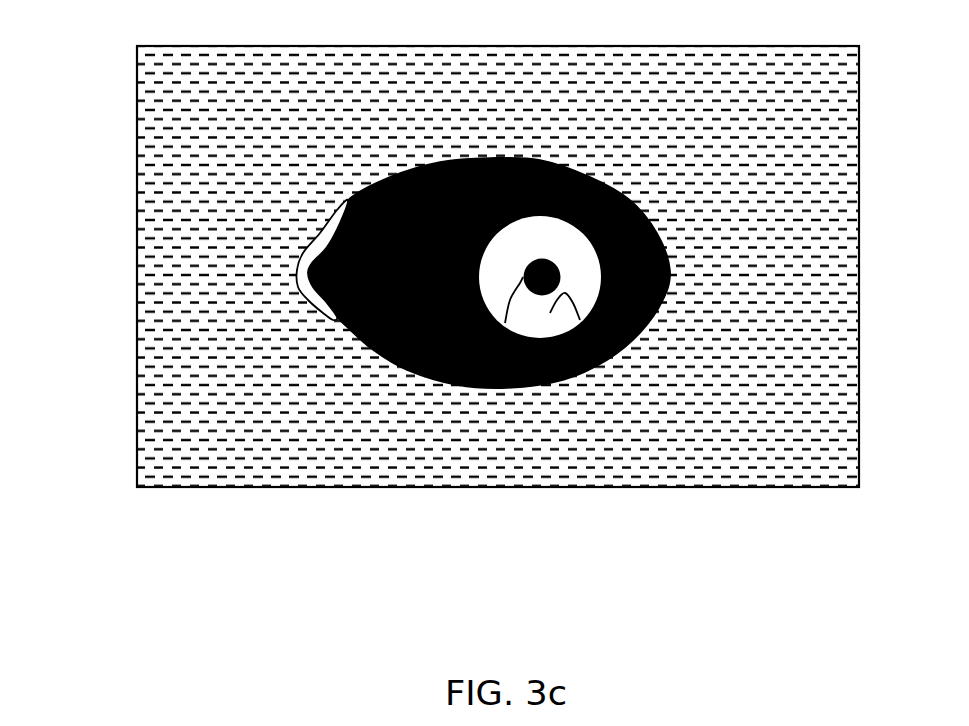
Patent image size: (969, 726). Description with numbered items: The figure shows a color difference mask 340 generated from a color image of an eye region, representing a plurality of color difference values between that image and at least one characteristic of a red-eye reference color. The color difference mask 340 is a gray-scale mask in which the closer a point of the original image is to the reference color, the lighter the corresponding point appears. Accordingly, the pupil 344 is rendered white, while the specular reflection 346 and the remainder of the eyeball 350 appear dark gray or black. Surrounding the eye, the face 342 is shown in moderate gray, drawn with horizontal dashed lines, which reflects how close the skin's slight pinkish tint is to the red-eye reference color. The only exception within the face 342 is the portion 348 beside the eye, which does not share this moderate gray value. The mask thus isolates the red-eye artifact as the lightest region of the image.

The color difference mask 340 is at (713, 486).
The face 342 is at (173, 435).
The pupil 344 is at (585, 380).
The specular reflection 346 is at (490, 390).
The portion 348 is at (297, 253).
The eyeball 350 is at (377, 363).